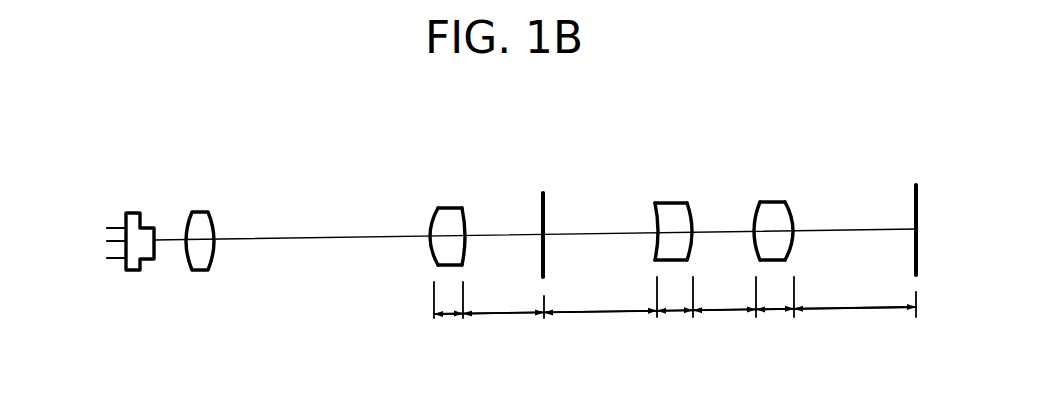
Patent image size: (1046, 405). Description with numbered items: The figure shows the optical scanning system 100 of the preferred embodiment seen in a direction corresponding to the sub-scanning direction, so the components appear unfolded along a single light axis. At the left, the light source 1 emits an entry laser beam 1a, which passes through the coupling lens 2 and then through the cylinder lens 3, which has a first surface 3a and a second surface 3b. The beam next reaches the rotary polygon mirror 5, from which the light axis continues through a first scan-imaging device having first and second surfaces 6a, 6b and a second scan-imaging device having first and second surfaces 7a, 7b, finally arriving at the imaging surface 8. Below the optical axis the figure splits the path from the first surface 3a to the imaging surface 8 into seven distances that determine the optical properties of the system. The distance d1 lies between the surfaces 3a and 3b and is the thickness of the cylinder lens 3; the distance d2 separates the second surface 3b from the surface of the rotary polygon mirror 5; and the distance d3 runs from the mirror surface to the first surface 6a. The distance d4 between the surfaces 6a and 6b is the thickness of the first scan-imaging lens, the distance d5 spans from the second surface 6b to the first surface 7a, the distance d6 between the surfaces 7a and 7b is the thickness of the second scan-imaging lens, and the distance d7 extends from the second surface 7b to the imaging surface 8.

The optical scanning system 100 is at (745, 100).
The light source 1 is at (133, 212).
The entry laser beam 1a is at (172, 244).
The coupling lens 2 is at (199, 212).
The cylinder lens 3 is at (449, 208).
The first surface of the cylinder lens 3a is at (430, 227).
The second surface of the cylinder lens 3b is at (465, 228).
The rotary polygon mirror 5 is at (541, 200).
The first surface of the first scan-imaging device 6a is at (655, 218).
The second surface of the first scan-imaging device 6b is at (693, 218).
The first surface of the second scan-imaging device 7a is at (761, 206).
The second surface of the second scan-imaging device 7b is at (792, 210).
The imaging surface 8 is at (914, 185).
The distance between first and second surfaces of the cylinder lens d1 is at (448, 316).
The distance between second surface of cylinder lens and rotary polygon mirror surfa d2 is at (503, 316).
The distance between rotary polygon mirror surface and first surface of first scan-i d3 is at (598, 314).
The distance between first and second surfaces of the first scan-imaging device d4 is at (675, 313).
The distance between second surface of first scan-imaging device and first surface o d5 is at (726, 312).
The distance between first and second surfaces of the second scan-imaging device d6 is at (775, 311).
The distance between second surface of second scan-imaging device and imaging surfac d7 is at (853, 310).